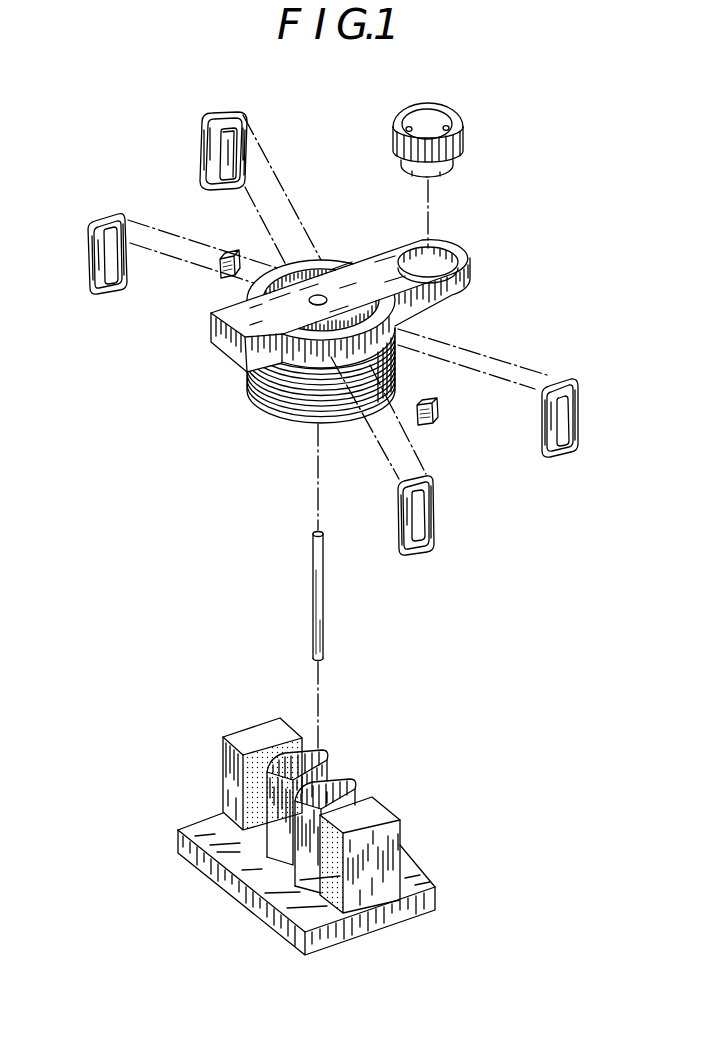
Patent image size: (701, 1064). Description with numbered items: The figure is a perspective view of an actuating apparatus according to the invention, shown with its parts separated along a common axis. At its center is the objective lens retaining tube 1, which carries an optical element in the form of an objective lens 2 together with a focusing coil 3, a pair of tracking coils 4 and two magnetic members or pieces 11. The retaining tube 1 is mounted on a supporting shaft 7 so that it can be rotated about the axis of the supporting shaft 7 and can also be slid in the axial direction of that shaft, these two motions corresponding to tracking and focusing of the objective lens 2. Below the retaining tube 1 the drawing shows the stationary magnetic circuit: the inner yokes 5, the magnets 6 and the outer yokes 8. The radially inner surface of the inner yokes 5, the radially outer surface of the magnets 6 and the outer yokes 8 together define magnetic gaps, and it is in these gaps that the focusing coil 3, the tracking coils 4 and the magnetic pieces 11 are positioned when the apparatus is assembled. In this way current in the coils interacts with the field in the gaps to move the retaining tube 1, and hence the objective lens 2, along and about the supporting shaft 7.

The objective lens retaining tube 1 is at (242, 326).
The objective lens 2 is at (436, 127).
The focusing coil 3 is at (273, 400).
The tracking coils 4 is at (244, 112).
The inner yokes 5 is at (307, 760).
The magnets 6 is at (247, 768).
The supporting shaft 7 is at (326, 606).
The outer yokes 8 is at (413, 882).
The magnetic pieces 11 is at (224, 257).